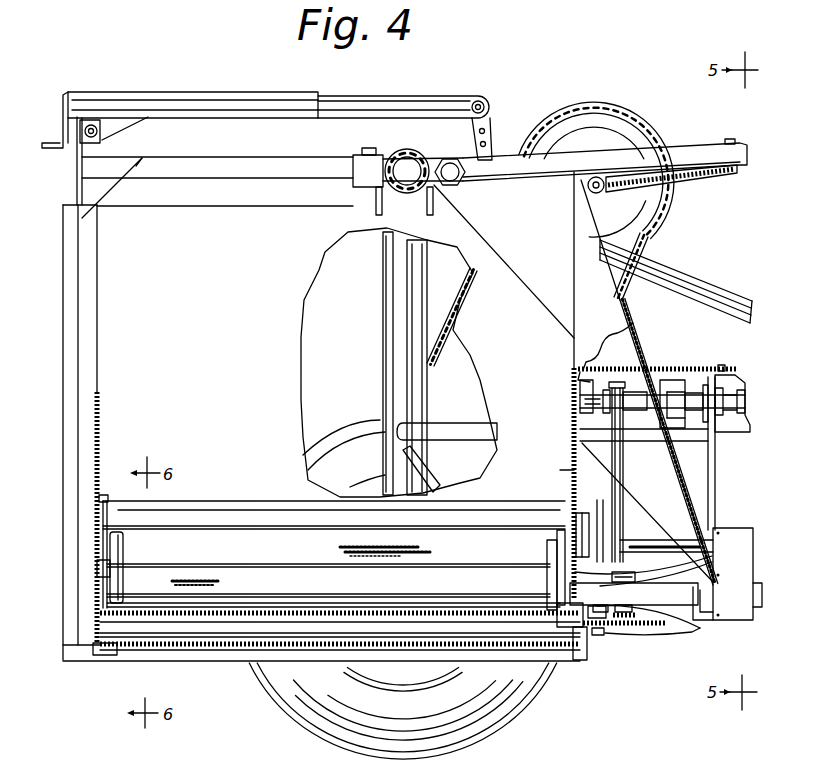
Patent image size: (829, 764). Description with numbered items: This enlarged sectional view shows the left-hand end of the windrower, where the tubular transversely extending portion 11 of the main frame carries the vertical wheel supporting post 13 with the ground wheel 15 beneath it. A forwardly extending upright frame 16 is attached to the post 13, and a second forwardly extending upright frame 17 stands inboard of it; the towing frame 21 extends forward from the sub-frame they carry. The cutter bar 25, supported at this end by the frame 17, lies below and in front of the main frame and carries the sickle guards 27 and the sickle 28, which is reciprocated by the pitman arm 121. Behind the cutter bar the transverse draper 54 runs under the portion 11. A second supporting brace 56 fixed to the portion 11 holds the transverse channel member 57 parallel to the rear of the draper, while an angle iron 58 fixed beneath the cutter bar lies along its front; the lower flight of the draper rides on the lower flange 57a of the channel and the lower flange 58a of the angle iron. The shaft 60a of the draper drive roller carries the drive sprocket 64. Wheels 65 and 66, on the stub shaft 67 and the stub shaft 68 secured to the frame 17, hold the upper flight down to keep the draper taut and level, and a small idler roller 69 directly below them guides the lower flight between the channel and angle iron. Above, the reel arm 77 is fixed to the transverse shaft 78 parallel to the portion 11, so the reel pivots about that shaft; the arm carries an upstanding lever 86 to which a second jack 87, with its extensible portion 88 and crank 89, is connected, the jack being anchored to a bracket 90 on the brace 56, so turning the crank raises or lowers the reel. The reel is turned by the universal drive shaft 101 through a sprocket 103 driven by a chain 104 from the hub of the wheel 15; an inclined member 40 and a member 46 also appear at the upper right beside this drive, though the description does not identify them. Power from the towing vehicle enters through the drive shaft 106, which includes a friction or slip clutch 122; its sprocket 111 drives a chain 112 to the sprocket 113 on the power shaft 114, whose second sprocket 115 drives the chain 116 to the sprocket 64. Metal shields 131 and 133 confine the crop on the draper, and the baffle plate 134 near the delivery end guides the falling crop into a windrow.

The tubular transversely extending portion 11 is at (421, 153).
The vertical wheel supporting post 13 is at (384, 343).
The wheel 15 is at (297, 708).
The forwardly extending upright frame 16 is at (441, 444).
The second forwardly extending upright frame 17 is at (621, 330).
The towing frame 21 is at (762, 595).
The cutter bar 25 is at (590, 626).
The sickle guards 27 is at (667, 631).
The sickle 28 is at (640, 630).
The channel member 40 is at (684, 273).
The flange 46 is at (690, 300).
The transverse draper 54 is at (262, 544).
The second supporting brace 56 is at (78, 325).
The transverse channel member 57 is at (86, 662).
The lower flange 57a is at (105, 656).
The angle iron 58 is at (583, 655).
The lower flange 58a is at (575, 662).
The shaft 60a is at (104, 503).
The drive sprocket 64 is at (600, 515).
The wheel 65 is at (121, 560).
The wheel 66 is at (548, 558).
The stub shaft 67 is at (97, 564).
The stub shaft 68 is at (548, 572).
The small idler roller 69 is at (263, 632).
The reel arm 77 is at (690, 148).
The transverse shaft 78 is at (452, 186).
The upstanding lever 86 is at (490, 128).
The second jack 87 is at (228, 97).
The extensible portion 88 is at (376, 99).
The crank 89 is at (63, 122).
The bracket 90 is at (76, 165).
The universal drive shaft 101 is at (690, 178).
The sprocket 103 is at (601, 113).
The chain 104 is at (628, 107).
The drive shaft 106 is at (590, 398).
The sprocket 111 is at (607, 400).
The chain 112 is at (625, 478).
The sprocket 113 is at (614, 541).
The power shaft 114 is at (679, 542).
The second sprocket 115 is at (626, 556).
The chain 116 is at (560, 520).
The pitman arm 121 is at (628, 582).
The friction or slip clutch 122 is at (678, 380).
The metal shield 131 is at (95, 466).
The metal shield 133 is at (558, 474).
The baffle plate 134 is at (225, 330).